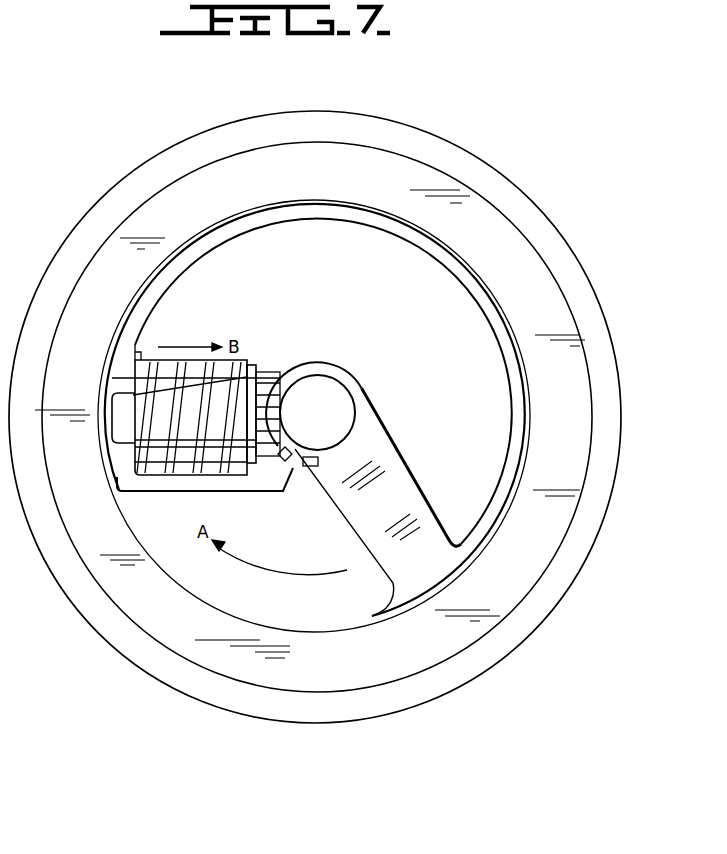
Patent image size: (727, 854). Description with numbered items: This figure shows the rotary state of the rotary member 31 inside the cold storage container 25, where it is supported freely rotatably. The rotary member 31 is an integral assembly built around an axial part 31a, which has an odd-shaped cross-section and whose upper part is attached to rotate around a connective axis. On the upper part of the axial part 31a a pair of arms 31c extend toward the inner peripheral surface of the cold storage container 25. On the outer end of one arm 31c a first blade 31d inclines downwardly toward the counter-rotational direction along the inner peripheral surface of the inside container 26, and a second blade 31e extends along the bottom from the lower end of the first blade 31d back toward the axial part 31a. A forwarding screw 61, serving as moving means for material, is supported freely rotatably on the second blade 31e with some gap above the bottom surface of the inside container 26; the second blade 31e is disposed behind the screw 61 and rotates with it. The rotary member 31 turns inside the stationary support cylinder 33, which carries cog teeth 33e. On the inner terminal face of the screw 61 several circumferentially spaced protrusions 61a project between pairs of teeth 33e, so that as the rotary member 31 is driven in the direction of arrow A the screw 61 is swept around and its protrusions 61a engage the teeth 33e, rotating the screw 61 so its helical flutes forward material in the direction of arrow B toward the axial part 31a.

The cold storage container 25 is at (675, 397).
The inside container 26 is at (326, 692).
The rotary member 31 is at (408, 387).
The axial part 31a is at (318, 392).
The arms 31c is at (232, 376).
The first blade 31d is at (432, 254).
The second blade 31e is at (230, 483).
The cylinder 33 is at (317, 470).
The cog teeth 33e is at (292, 482).
The forwarding screw 61 is at (163, 478).
The protrusions 61a is at (268, 372).